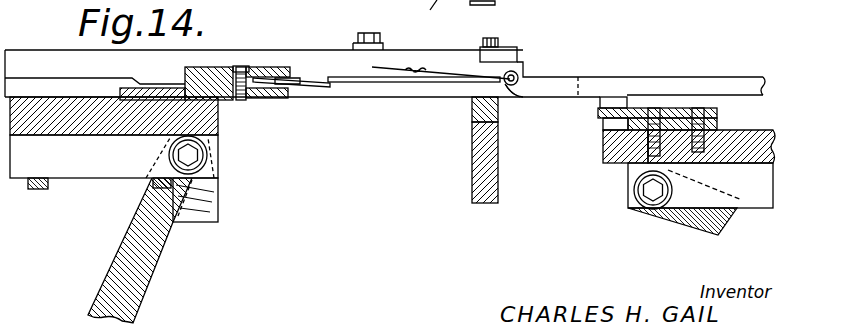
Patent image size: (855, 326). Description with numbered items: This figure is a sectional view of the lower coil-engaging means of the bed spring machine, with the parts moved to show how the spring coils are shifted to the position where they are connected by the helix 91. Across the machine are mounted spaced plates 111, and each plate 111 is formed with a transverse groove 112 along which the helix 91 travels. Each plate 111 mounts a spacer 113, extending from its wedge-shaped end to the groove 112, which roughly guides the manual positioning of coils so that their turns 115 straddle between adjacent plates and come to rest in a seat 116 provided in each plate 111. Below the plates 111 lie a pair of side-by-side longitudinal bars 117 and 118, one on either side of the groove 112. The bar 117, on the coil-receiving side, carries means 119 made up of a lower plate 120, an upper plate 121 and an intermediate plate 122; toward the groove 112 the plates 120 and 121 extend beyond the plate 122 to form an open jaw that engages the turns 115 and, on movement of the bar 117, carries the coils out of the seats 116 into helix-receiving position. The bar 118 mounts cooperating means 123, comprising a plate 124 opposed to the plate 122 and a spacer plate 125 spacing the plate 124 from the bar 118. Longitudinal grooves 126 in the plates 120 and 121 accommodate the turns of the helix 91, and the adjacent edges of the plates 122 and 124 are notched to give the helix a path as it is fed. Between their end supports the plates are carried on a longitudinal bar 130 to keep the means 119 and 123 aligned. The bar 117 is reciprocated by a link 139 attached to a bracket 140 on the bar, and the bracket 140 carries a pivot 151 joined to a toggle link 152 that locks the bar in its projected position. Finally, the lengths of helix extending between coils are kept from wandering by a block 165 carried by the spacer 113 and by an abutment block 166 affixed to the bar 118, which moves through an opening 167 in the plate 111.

The helix 91 is at (519, 73).
The plate 111 is at (432, 92).
The transverse groove 112 is at (515, 86).
The spacer 113 is at (40, 57).
The turns 115 is at (315, 100).
The seat 116 is at (355, 87).
The longitudinal bar 117 is at (66, 126).
The longitudinal bar 118 is at (746, 156).
The means 119 is at (246, 62).
The lower plate 120 is at (255, 98).
The upper plate 121 is at (270, 70).
The intermediate plate 122 is at (186, 72).
The means 123 is at (729, 118).
The plate 124 is at (688, 112).
The spacer plate 125 is at (638, 124).
The longitudinal groove 126 is at (283, 77).
The longitudinal bar 130 is at (499, 192).
The link 139 is at (220, 207).
The bracket 140 is at (86, 172).
The pivot 151 is at (186, 157).
The toggle link 152 is at (126, 243).
The block 165 is at (511, 52).
The abutment block 166 is at (613, 104).
The opening 167 is at (580, 74).